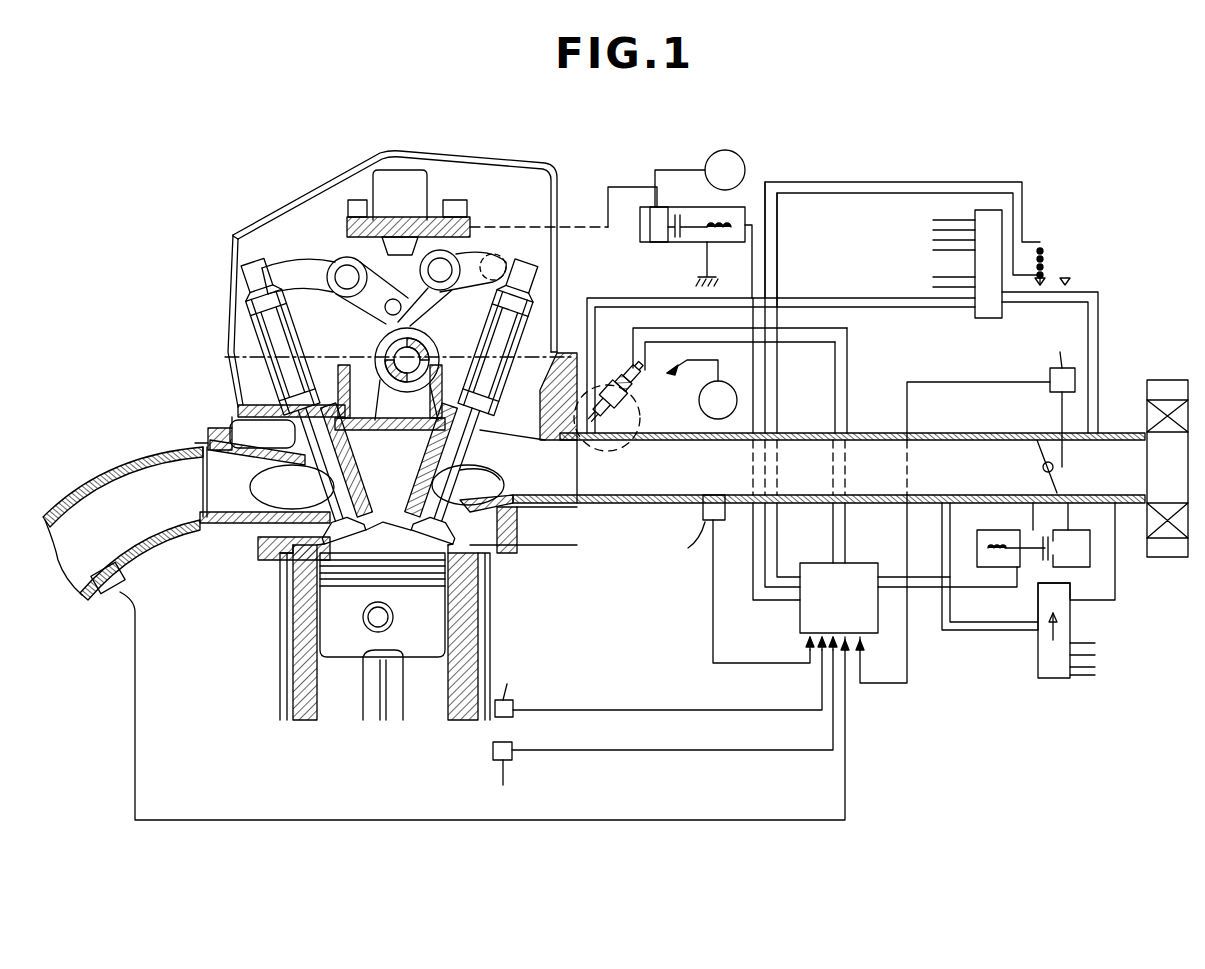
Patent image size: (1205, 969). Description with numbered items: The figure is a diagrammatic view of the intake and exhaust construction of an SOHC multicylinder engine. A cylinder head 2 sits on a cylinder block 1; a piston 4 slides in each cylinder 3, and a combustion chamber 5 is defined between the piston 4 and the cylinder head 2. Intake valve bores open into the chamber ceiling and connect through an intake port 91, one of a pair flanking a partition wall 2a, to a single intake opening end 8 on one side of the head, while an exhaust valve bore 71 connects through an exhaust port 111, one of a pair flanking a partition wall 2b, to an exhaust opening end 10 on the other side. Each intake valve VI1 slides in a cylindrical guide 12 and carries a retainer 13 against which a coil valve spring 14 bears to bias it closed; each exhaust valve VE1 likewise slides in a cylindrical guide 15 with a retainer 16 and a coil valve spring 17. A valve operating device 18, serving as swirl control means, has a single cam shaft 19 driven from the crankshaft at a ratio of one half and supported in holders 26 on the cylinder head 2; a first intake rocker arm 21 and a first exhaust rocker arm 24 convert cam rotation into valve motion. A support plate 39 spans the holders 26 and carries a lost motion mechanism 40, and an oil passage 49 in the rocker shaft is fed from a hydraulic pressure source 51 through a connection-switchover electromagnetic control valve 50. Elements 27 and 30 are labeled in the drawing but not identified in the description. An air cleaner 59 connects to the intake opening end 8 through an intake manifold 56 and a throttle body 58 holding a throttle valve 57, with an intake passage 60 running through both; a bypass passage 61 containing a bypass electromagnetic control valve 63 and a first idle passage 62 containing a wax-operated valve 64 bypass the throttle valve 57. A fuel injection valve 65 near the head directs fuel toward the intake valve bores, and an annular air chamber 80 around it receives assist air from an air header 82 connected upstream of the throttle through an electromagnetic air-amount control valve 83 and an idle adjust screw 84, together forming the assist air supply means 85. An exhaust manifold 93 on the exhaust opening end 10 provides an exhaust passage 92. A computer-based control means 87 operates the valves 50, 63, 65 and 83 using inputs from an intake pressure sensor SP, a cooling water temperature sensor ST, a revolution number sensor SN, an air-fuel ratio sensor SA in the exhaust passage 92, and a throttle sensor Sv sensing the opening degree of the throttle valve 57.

The cylinder block 1 is at (270, 652).
The cylinder head 2 is at (218, 416).
The partition wall 2a is at (508, 467).
The partition wall 2b is at (250, 470).
The cylinder 3 is at (320, 718).
The piston 4 is at (424, 650).
The combustion chamber 5 is at (330, 568).
The intake opening end 8 is at (565, 510).
The exhaust opening end 10 is at (207, 498).
The cylindrical guide 12 is at (523, 421).
The retainer 13 is at (547, 308).
The coil valve spring 14 is at (500, 400).
The cylindrical guide 15 is at (280, 440).
The retainer 16 is at (250, 310).
The coil valve spring 17 is at (232, 337).
The valve operating device 18 is at (430, 225).
The cam shaft 19 is at (380, 344).
The first intake rocker arm 21 is at (420, 298).
The first exhaust rocker arm 24 is at (302, 274).
The holder 26 is at (345, 318).
The combustion chamber 27 is at (370, 442).
The cam 30 is at (395, 462).
The support plate 39 is at (390, 232).
The lost motion mechanism 40 is at (365, 247).
The oil passage 49 is at (407, 204).
The connection-switchover electromagnetic control valve 50 is at (742, 207).
The hydraulic pressure source 51 is at (725, 170).
The intake manifold 56 is at (802, 433).
The throttle valve 57 is at (1040, 483).
The throttle body 58 is at (1013, 433).
The air cleaner 59 is at (1167, 380).
The intake passage 60 is at (972, 485).
The bypass passage 61 is at (1105, 492).
The first idle passage 62 is at (995, 630).
The bypass electromagnetic control valve 63 is at (1100, 583).
The wax-operated valve 64 is at (1058, 678).
The fuel injection valve 65 is at (650, 420).
The exhaust valve bore 71 is at (292, 487).
The annular air chamber 80 is at (597, 443).
The air header 82 is at (990, 318).
The electromagnetic air-amount control valve 83 is at (1045, 280).
The idle adjust screw 84 is at (1068, 280).
The assist air supply means 85 is at (620, 298).
The control means 87 is at (853, 611).
The intake port 91 is at (522, 522).
The exhaust passage 92 is at (133, 527).
The exhaust manifold 93 is at (140, 458).
The exhaust port 111 is at (262, 535).
The exhaust valve VE1 is at (290, 608).
The intake valve VI1 is at (485, 605).
The air-fuel ratio sensor SA is at (103, 590).
The intake pressure sensor SP is at (735, 579).
The engine cooling water temperature sensor ST is at (658, 683).
The revolution number sensor SN is at (660, 732).
The throttle sensor Sv is at (965, 504).